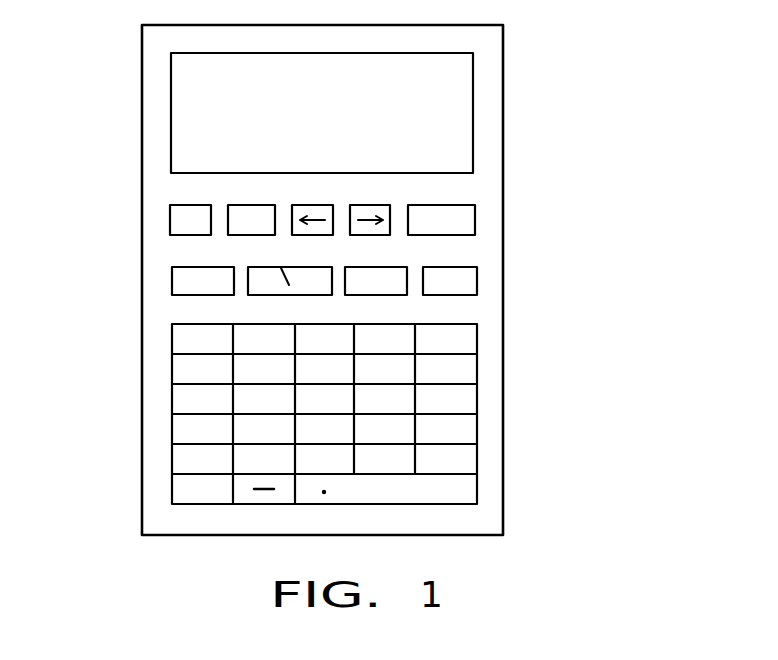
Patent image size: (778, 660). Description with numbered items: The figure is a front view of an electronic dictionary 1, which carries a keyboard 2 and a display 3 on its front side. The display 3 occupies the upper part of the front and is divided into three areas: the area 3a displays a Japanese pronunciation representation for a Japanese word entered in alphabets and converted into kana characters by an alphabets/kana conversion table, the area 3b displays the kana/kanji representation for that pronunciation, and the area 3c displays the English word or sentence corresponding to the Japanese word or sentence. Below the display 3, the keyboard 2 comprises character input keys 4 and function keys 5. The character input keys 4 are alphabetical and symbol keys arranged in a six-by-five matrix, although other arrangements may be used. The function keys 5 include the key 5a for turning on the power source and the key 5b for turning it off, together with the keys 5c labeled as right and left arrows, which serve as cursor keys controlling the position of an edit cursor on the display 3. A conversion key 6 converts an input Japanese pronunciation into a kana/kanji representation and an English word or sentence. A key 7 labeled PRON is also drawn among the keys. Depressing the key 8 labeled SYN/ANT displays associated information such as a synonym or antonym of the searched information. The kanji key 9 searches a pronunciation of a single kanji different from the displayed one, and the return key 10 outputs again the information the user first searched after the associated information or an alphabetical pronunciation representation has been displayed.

The electronic dictionary 1 is at (503, 63).
The keyboard 2 is at (510, 205).
The display 3 is at (473, 118).
The display area for Japanese pronunciation representation 3a is at (183, 67).
The display area for kana/kanji representation 3b is at (183, 105).
The display area for English word or sentence 3c is at (183, 156).
The character input keys 4 is at (167, 504).
The function keys 5 is at (167, 205).
The power-on key 5a is at (172, 204).
The power-off key 5b is at (247, 205).
The cursor keys 5c is at (383, 235).
The conversion key 6 is at (478, 210).
The pronunciation key 7 is at (172, 283).
The SYN/ANT key 8 is at (262, 296).
The kanji key 9 is at (385, 296).
The return key 10 is at (477, 281).